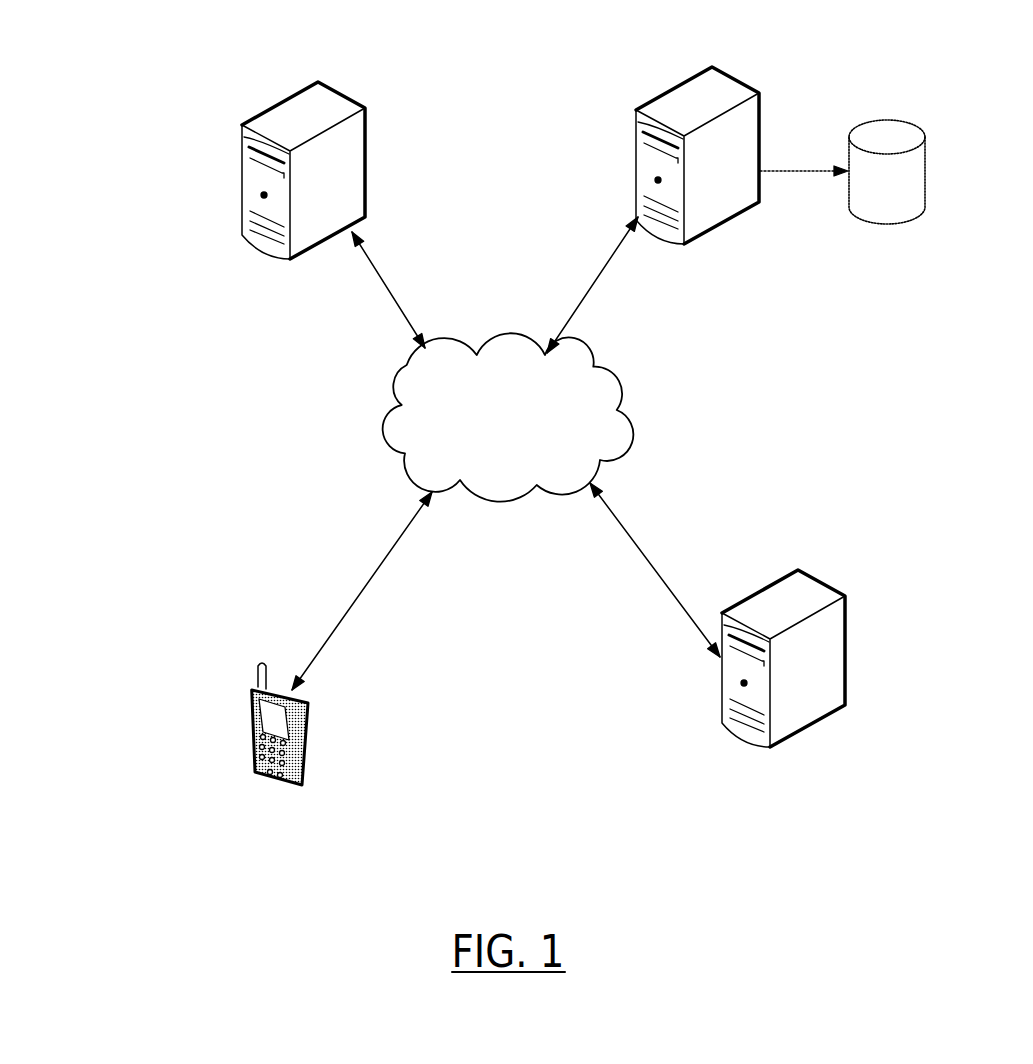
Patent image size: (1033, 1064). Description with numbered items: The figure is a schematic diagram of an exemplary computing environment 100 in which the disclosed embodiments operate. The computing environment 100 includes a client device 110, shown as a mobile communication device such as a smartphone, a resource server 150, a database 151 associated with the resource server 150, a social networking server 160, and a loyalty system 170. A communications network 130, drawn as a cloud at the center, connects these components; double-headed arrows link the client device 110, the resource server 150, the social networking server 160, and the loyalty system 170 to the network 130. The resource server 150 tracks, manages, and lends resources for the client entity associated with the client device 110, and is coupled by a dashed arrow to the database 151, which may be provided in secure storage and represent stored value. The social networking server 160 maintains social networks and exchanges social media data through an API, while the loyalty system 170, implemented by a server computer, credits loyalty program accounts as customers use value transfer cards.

The computing environment 100 is at (135, 307).
The client device 110 is at (310, 723).
The communications network 130 is at (489, 428).
The resource server 150 is at (703, 82).
The database 151 is at (889, 127).
The social networking server 160 is at (776, 590).
The loyalty system 170 is at (288, 115).